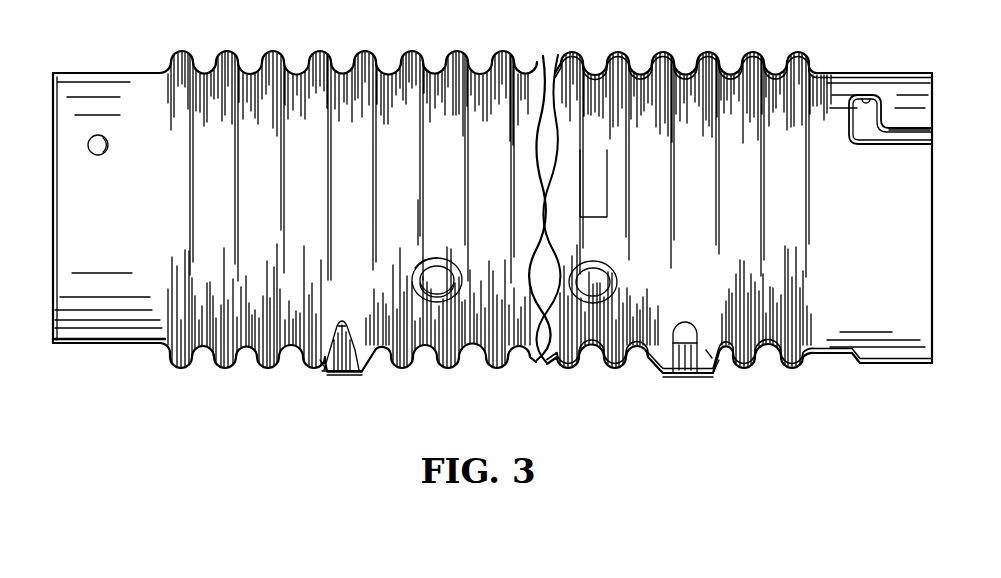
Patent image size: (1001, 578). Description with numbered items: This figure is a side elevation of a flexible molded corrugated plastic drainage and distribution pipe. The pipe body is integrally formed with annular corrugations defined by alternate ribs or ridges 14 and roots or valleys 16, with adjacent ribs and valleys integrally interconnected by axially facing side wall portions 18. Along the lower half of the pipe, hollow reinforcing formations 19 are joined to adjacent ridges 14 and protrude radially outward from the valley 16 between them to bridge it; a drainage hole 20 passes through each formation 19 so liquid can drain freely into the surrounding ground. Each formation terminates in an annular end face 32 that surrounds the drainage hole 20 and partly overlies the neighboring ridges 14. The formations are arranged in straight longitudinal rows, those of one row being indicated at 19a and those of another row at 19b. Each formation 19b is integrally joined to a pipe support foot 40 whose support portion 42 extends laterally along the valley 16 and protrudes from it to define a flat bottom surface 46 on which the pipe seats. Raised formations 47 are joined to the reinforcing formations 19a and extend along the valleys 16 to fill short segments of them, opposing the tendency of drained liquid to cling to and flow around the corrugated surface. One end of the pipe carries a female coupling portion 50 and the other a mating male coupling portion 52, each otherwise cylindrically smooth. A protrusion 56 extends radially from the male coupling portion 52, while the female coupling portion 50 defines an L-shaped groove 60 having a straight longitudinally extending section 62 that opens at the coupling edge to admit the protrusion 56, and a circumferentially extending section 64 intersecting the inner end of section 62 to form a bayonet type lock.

The ribs or ridges 14 is at (269, 63).
The roots or valleys 16 is at (205, 72).
The side wall portions 18 is at (304, 70).
The reinforcing formation 19 is at (443, 302).
The reinforcing formations of row 26 19a is at (419, 271).
The reinforcing formations of row 27 19b is at (318, 372).
The drainage hole 20 is at (441, 269).
The end face 32 is at (458, 276).
The pipe support foot 40 is at (317, 378).
The support portion 42 is at (372, 364).
The flat bottom surface 46 is at (336, 378).
The raised formation 47 is at (425, 236).
The female coupling portion 50 is at (893, 318).
The male coupling portion 52 is at (112, 318).
The protrusion 56 is at (105, 156).
The L-shaped groove 60 is at (883, 148).
The straight longitudinally extending groove section 62 is at (907, 128).
The circumferentially extending groove section 64 is at (868, 96).